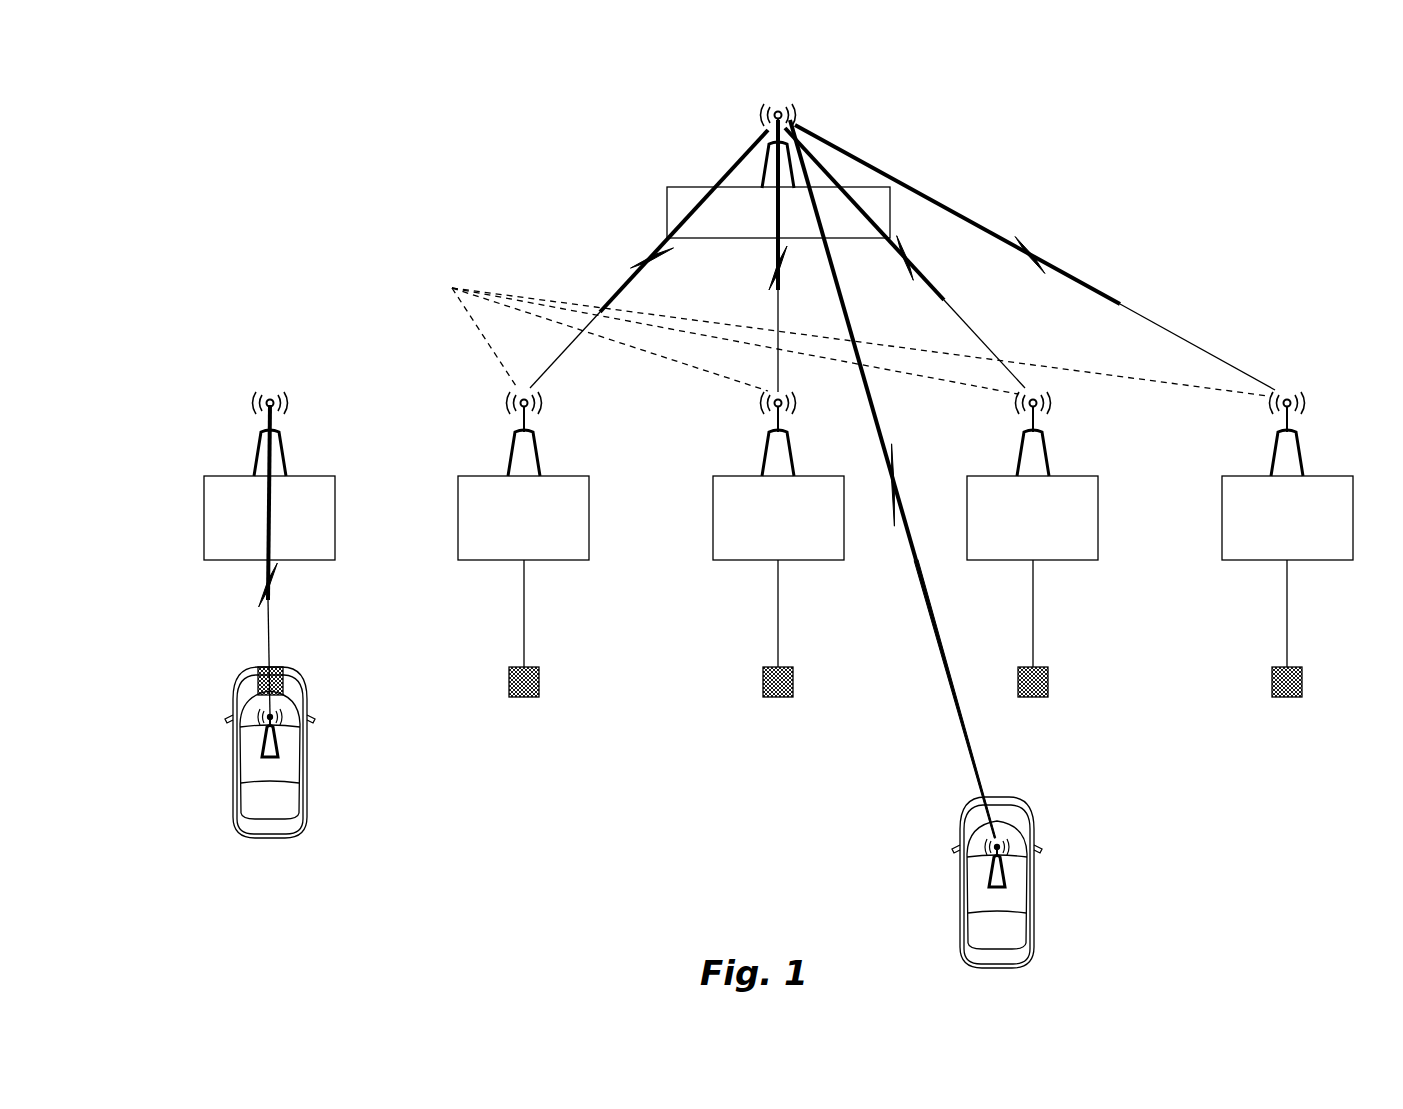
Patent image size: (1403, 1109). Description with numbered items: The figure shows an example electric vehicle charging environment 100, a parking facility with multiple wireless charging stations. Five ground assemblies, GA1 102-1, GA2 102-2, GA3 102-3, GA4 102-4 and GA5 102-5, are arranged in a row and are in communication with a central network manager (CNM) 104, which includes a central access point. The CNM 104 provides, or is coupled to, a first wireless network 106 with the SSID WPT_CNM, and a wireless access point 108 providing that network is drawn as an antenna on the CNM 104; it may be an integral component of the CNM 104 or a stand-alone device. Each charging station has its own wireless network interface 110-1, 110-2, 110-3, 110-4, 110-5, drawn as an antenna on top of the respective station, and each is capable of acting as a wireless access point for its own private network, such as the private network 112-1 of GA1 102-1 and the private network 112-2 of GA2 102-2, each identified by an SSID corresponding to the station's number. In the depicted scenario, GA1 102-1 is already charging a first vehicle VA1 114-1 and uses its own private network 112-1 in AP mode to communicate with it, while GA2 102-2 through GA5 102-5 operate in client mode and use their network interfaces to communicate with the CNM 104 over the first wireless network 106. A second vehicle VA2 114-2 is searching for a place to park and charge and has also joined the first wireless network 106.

The electric vehicle charging environment 100 is at (200, 103).
The wireless charging station GA1 102-1 is at (204, 515).
The wireless charging station GA2 102-2 is at (492, 544).
The wireless charging station GA3 102-3 is at (746, 544).
The wireless charging station GA4 102-4 is at (1001, 544).
The wireless charging station GA5 102-5 is at (1255, 544).
The central network manager 104 is at (665, 187).
The first wireless network 106 is at (1012, 98).
The wireless access point 108 is at (763, 165).
The wireless network interface 110-1 is at (258, 460).
The wireless network interface 110-2 is at (512, 460).
The wireless network interface 110-3 is at (767, 462).
The wireless network interface 110-4 is at (1020, 465).
The wireless network interface 110-5 is at (1298, 452).
The private network 112-1 is at (270, 310).
The private network 112-2 is at (452, 222).
The vehicle VA1 114-1 is at (238, 683).
The vehicle VA2 114-2 is at (1032, 812).